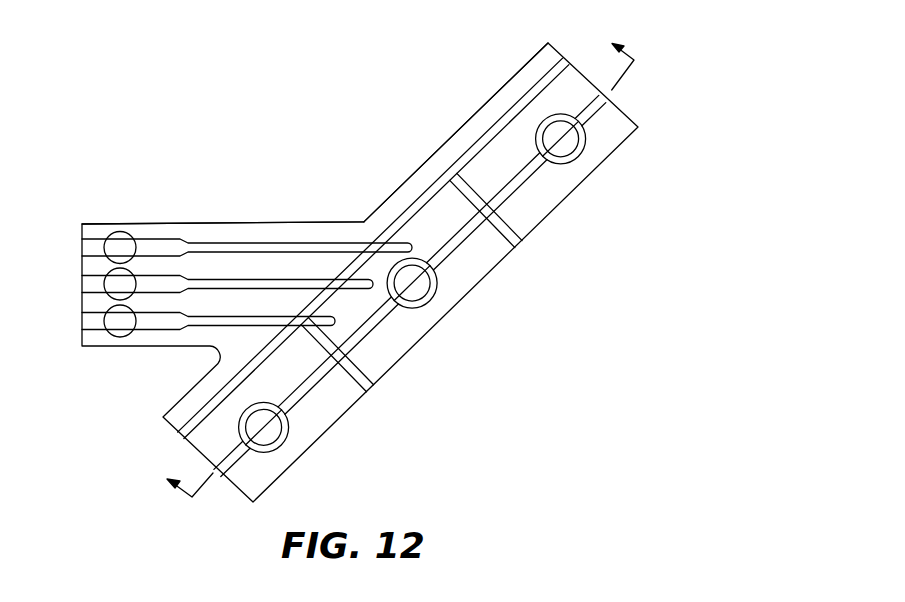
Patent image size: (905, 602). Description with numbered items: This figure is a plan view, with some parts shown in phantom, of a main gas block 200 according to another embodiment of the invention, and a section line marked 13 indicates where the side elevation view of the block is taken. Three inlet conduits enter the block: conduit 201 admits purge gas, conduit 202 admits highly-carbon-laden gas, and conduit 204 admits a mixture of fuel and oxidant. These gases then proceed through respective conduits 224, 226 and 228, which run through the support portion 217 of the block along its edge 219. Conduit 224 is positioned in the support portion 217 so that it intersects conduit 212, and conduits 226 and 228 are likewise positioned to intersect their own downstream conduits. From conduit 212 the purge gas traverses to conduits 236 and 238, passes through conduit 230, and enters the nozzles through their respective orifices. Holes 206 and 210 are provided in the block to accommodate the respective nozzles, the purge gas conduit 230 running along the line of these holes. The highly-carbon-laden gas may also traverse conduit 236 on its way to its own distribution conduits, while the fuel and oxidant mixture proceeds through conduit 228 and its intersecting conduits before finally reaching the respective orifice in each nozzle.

The main gas block 200 is at (282, 126).
The conduit 201 is at (121, 230).
The conduit 202 is at (102, 277).
The conduit 204 is at (105, 332).
The hole 206 is at (580, 156).
The hole 210 is at (430, 301).
The conduit 212 is at (508, 112).
The support portion 217 is at (339, 222).
The substrate edge 219 is at (461, 134).
The conduit 224 is at (204, 240).
The conduit 226 is at (265, 280).
The conduit 228 is at (163, 332).
The conduit 230 is at (599, 117).
The conduit 236 is at (519, 244).
The conduit 238 is at (368, 386).
The section line for FIG. 13 is at (385, 257).